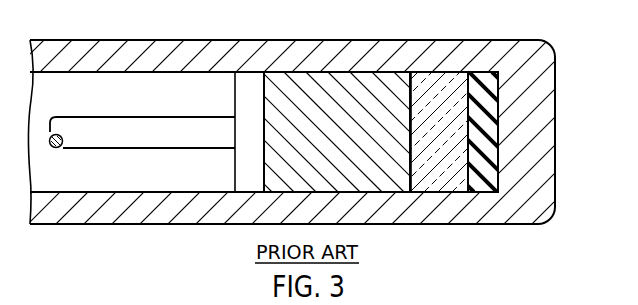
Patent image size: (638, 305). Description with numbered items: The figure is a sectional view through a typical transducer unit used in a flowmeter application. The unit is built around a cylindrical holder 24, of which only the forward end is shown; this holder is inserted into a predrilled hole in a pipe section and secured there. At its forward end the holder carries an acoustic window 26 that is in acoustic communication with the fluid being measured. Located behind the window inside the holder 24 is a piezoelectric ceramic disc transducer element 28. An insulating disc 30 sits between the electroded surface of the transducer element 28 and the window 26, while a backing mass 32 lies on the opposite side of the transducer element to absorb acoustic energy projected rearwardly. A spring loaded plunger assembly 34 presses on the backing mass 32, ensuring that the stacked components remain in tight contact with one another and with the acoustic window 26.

The cylindrical holder 24 is at (240, 40).
The acoustic window 26 is at (548, 108).
The piezoelectric ceramic disc transducer element 28 is at (430, 80).
The insulating disc 30 is at (483, 80).
The backing mass 32 is at (327, 80).
The spring loaded plunger assembly 34 is at (100, 141).